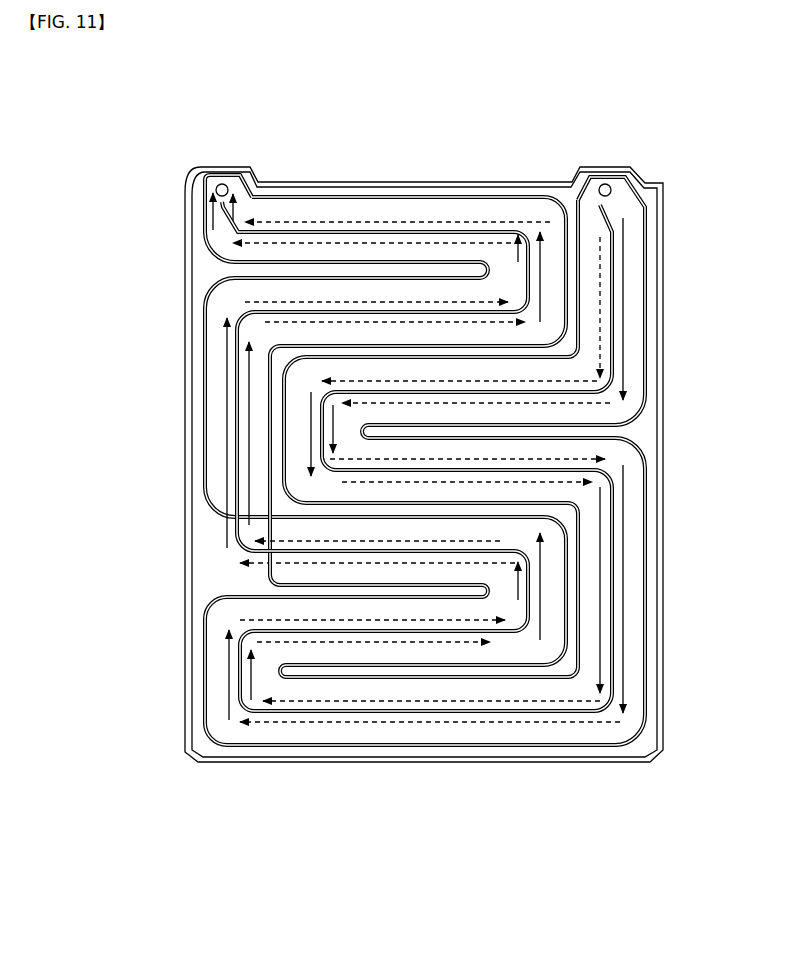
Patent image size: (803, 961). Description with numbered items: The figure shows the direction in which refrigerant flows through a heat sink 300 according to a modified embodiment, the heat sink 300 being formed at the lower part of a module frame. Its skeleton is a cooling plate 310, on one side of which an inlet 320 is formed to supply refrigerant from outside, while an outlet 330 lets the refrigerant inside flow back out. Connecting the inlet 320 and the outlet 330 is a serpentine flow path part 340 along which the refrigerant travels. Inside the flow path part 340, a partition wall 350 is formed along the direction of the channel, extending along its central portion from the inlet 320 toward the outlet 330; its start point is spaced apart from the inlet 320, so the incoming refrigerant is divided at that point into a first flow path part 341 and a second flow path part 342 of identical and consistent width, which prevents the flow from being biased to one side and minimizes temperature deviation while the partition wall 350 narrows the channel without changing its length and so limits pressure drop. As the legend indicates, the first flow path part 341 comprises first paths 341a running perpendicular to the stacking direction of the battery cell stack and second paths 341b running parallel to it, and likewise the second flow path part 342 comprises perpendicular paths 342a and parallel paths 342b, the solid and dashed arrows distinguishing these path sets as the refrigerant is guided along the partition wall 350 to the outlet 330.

The heat sink 300 is at (438, 68).
The cooling plate 310 is at (643, 428).
The inlet 320 is at (606, 183).
The outlet 330 is at (222, 183).
The flow path part 340 is at (735, 250).
The first flow path part 341 is at (633, 300).
The second flow path part 342 is at (590, 257).
The partition wall 350 is at (612, 505).
The 1-1 paths 341a is at (426, 532).
The 1-2 paths 342a is at (333, 857).
The 2-1 paths 341b is at (333, 908).
The 2-2 paths 342b is at (419, 579).